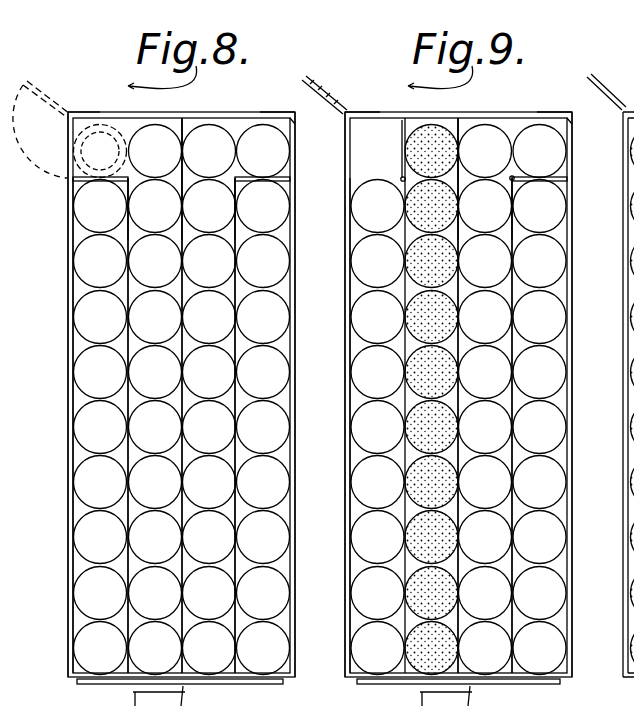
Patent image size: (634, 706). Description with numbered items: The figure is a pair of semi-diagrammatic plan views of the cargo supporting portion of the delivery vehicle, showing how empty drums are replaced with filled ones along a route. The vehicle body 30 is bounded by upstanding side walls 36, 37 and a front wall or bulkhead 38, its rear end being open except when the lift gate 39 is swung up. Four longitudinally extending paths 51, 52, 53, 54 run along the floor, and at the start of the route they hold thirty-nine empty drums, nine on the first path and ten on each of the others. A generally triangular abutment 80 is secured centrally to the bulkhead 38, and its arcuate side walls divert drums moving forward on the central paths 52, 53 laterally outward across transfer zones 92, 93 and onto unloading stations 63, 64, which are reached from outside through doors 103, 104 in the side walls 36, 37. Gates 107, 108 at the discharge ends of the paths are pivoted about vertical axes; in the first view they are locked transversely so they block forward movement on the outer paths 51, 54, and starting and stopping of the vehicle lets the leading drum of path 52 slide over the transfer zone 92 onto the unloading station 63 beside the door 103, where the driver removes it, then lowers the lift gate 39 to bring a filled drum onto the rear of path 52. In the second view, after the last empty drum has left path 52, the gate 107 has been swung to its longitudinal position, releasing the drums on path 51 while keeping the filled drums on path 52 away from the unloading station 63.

In FIG. 8, the body 30 is at (256, 106).
In FIG. 9, the body 30 is at (524, 108).
In FIG. 8, the side wall 36 is at (72, 400).
In FIG. 9, the side wall 36 is at (347, 452).
In FIG. 8, the side wall 37 is at (294, 410).
In FIG. 9, the side wall 37 is at (565, 447).
In FIG. 8, the front wall or bulkhead 38 is at (100, 120).
In FIG. 8, the lift gate 39 is at (100, 684).
In FIG. 9, the lift gate 39 is at (392, 684).
In FIG. 8, the path 51 is at (75, 287).
In FIG. 9, the path 51 is at (350, 292).
In FIG. 8, the path 52 is at (132, 345).
In FIG. 9, the path 52 is at (410, 345).
In FIG. 8, the path 53 is at (230, 347).
In FIG. 9, the path 53 is at (500, 347).
In FIG. 8, the path 54 is at (283, 292).
In FIG. 9, the path 54 is at (560, 292).
In FIG. 8, the unloading station 63 is at (80, 118).
In FIG. 9, the unloading station 63 is at (358, 122).
In FIG. 8, the unloading station 64 is at (282, 123).
In FIG. 9, the unloading station 64 is at (553, 117).
In FIG. 8, the abutment 80 is at (186, 123).
In FIG. 9, the abutment 80 is at (457, 120).
In FIG. 8, the transfer zone 92 is at (128, 125).
In FIG. 8, the transfer zone 93 is at (233, 123).
In FIG. 9, the transfer zone 93 is at (508, 120).
In FIG. 8, the door 103 is at (37, 83).
In FIG. 9, the door 103 is at (322, 82).
In FIG. 8, the door 104 is at (295, 128).
In FIG. 9, the door 104 is at (577, 127).
In FIG. 8, the gate 107 is at (70, 188).
In FIG. 9, the gate 107 is at (402, 125).
In FIG. 8, the gate 108 is at (292, 186).
In FIG. 9, the gate 108 is at (573, 174).